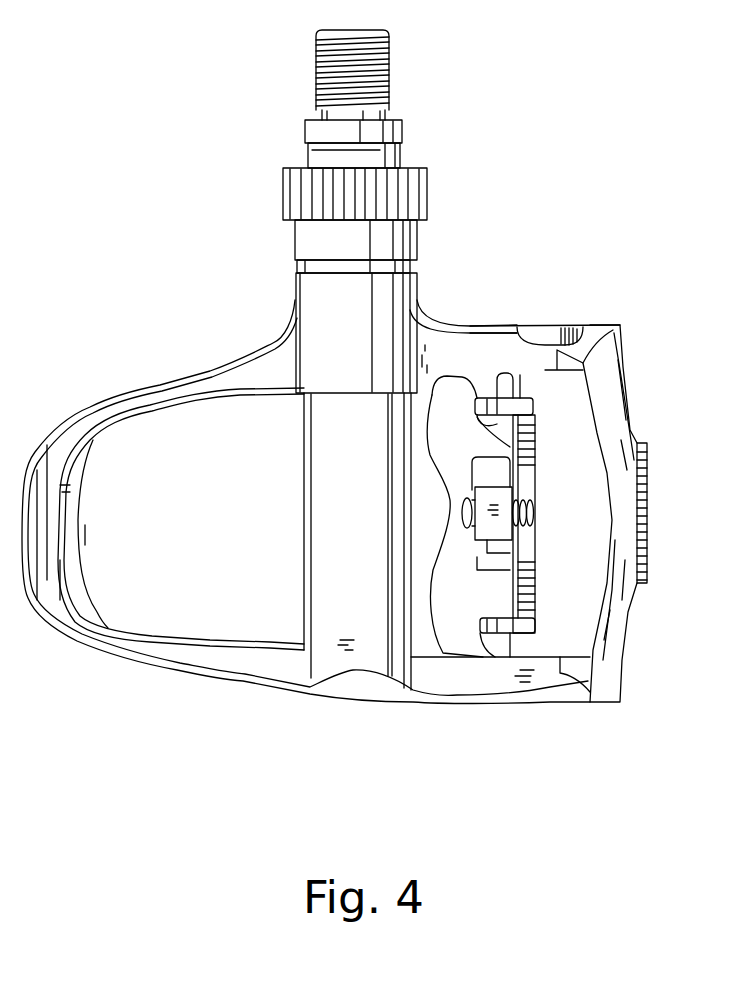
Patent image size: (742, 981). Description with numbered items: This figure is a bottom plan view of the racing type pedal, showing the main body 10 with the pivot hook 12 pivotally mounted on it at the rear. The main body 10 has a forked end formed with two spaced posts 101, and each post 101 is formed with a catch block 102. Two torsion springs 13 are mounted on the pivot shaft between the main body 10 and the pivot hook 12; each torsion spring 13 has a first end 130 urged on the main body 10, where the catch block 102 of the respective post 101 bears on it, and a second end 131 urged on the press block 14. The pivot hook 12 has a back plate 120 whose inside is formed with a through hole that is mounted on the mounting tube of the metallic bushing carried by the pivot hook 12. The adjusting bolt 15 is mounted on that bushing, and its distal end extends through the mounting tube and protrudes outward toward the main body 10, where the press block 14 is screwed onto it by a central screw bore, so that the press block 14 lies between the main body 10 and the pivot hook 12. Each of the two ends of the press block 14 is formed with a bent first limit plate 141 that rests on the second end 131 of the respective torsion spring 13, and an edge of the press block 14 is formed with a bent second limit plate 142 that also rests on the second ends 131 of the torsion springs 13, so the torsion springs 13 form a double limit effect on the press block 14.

The main body 10 is at (257, 680).
The spaced posts 101 is at (495, 333).
The catch block 102 is at (483, 387).
The pivot hook 12 is at (625, 390).
The back plate 120 is at (622, 633).
The torsion springs 13 is at (535, 570).
The first end 130 is at (527, 400).
The second end 131 is at (527, 483).
The press block 14 is at (468, 470).
The first limit plate 141 is at (490, 460).
The second limit plate 142 is at (492, 528).
The adjusting bolt 15 is at (462, 512).